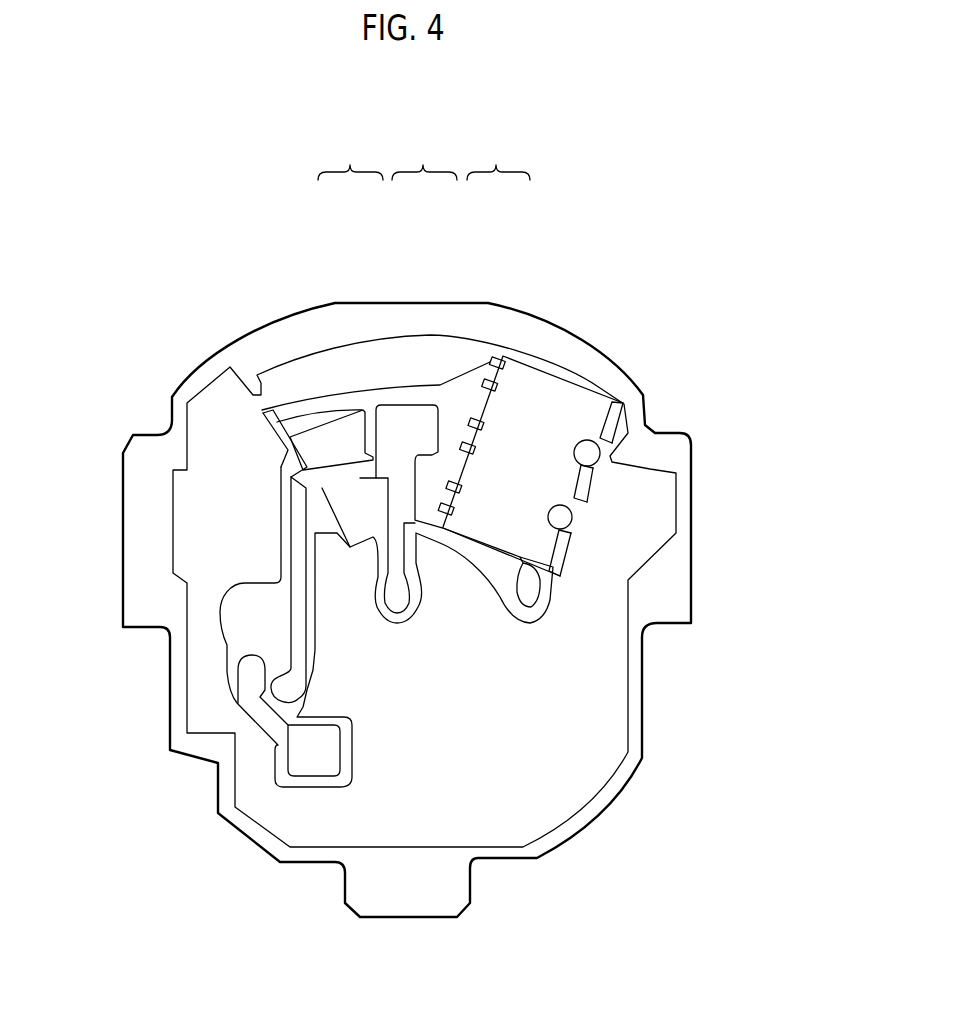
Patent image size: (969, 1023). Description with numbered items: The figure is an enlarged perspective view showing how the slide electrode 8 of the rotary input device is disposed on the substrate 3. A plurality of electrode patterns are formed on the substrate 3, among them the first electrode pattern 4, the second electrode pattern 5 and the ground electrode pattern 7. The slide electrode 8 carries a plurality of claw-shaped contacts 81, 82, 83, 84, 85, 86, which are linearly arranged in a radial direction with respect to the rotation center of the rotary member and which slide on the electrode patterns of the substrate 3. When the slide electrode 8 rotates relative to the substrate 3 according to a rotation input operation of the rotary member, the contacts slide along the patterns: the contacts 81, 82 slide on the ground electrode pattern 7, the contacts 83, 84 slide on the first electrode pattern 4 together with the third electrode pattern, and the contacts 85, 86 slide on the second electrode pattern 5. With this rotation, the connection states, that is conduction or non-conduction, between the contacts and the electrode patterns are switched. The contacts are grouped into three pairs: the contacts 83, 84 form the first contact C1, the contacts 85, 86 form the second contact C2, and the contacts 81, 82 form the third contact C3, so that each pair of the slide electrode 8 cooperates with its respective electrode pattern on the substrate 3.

The substrate 3 is at (643, 760).
The first electrode pattern 4 is at (335, 443).
The second electrode pattern 5 is at (358, 508).
The ground electrode pattern 7 is at (355, 367).
The slide electrode 8 is at (575, 391).
The contact 81 is at (491, 361).
The contact 82 is at (483, 383).
The contact 83 is at (469, 422).
The contact 84 is at (461, 446).
The contact 85 is at (447, 485).
The contact 86 is at (440, 507).
The first contact C1 is at (424, 156).
The second contact C2 is at (350, 156).
The third contact C3 is at (498, 156).